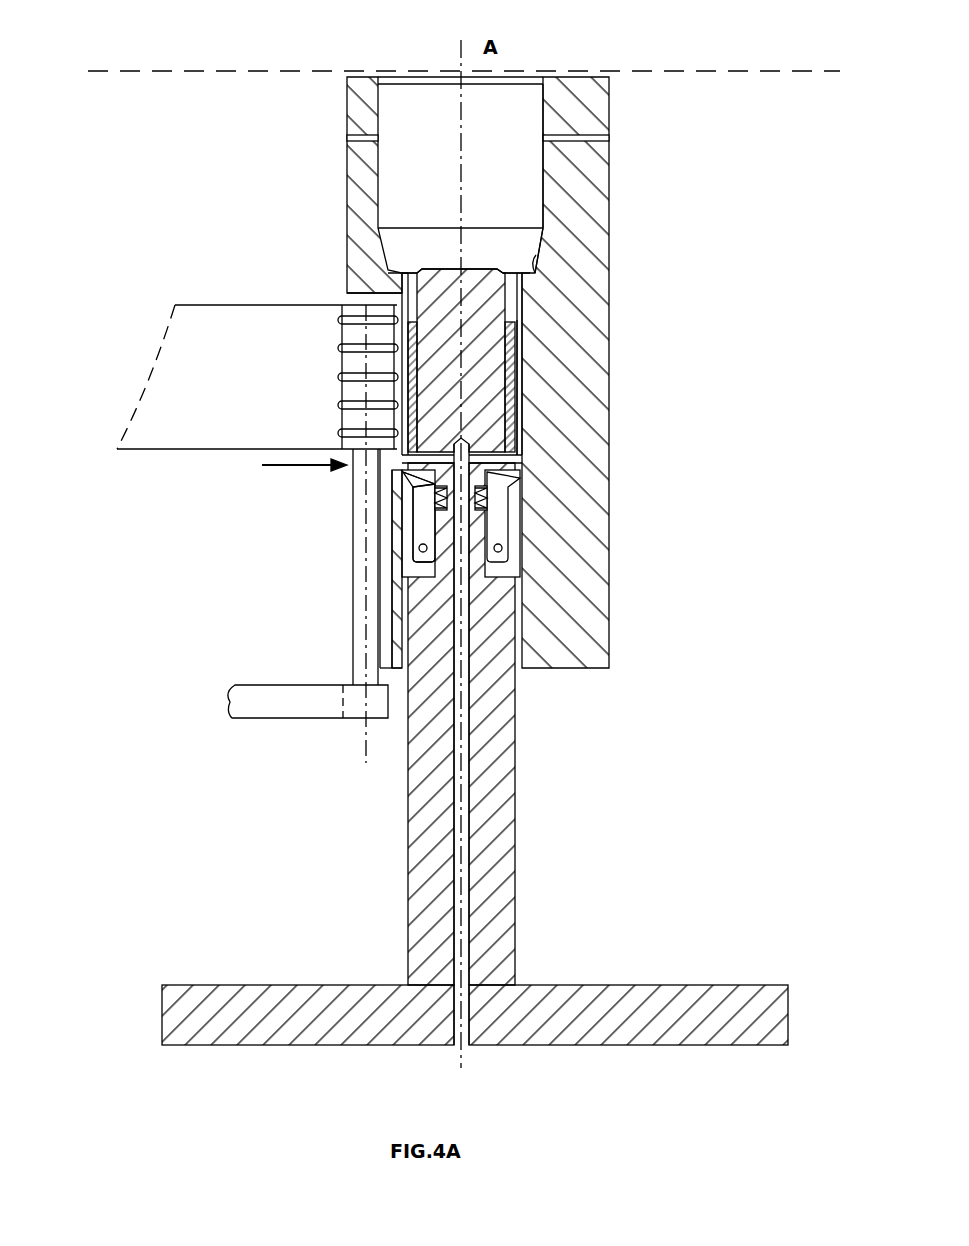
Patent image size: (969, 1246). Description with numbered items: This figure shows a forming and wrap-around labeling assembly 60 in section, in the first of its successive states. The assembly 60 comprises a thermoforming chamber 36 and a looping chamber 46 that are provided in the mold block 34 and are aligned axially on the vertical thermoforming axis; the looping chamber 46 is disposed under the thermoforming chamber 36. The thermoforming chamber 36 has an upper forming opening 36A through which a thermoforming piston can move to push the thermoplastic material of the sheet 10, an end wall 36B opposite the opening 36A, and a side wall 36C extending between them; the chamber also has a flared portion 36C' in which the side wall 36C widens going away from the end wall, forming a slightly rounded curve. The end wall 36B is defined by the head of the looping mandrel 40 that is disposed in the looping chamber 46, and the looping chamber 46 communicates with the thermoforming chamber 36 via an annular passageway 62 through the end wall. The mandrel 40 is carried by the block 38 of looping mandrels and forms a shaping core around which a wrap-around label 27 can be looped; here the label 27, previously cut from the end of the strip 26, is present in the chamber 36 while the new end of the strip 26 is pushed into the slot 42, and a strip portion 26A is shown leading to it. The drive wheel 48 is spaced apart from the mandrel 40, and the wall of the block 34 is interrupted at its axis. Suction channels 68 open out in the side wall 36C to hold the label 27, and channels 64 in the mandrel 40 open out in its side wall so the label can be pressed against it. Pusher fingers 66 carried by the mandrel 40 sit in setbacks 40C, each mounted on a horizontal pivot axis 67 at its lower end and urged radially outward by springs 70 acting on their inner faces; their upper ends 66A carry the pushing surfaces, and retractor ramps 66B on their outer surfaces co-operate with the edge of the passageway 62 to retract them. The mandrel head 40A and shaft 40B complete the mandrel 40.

The sheet 10 is at (240, 70).
The strip 26 is at (222, 322).
The actuator rod 26A is at (397, 412).
The wrap-around label 27 is at (543, 136).
The mold block 34 is at (609, 622).
The thermoforming chamber 36 is at (425, 103).
The upper forming opening 36A is at (518, 86).
The end wall 36B is at (537, 268).
The side wall 36C is at (487, 70).
The flared portion 36C' is at (501, 250).
The block of looping mandrels 38 is at (779, 1014).
The looping mandrel 40 is at (519, 342).
The stem head 40A is at (495, 302).
The stem shaft 40B is at (519, 382).
The setback 40C is at (417, 566).
The slot 42 is at (398, 298).
The looping chamber 46 is at (514, 418).
The drive wheel 48 is at (342, 354).
The forming and wrap-around labeling assembly 60 is at (634, 211).
The annular passageway 62 is at (405, 269).
The channels 64 is at (522, 461).
The pusher fingers 66 is at (418, 518).
The upper ends 66A is at (517, 479).
The retractor ramps 66B is at (509, 500).
The pivot axis 67 is at (497, 563).
The suction channels 68 is at (347, 138).
The springs 70 is at (403, 478).